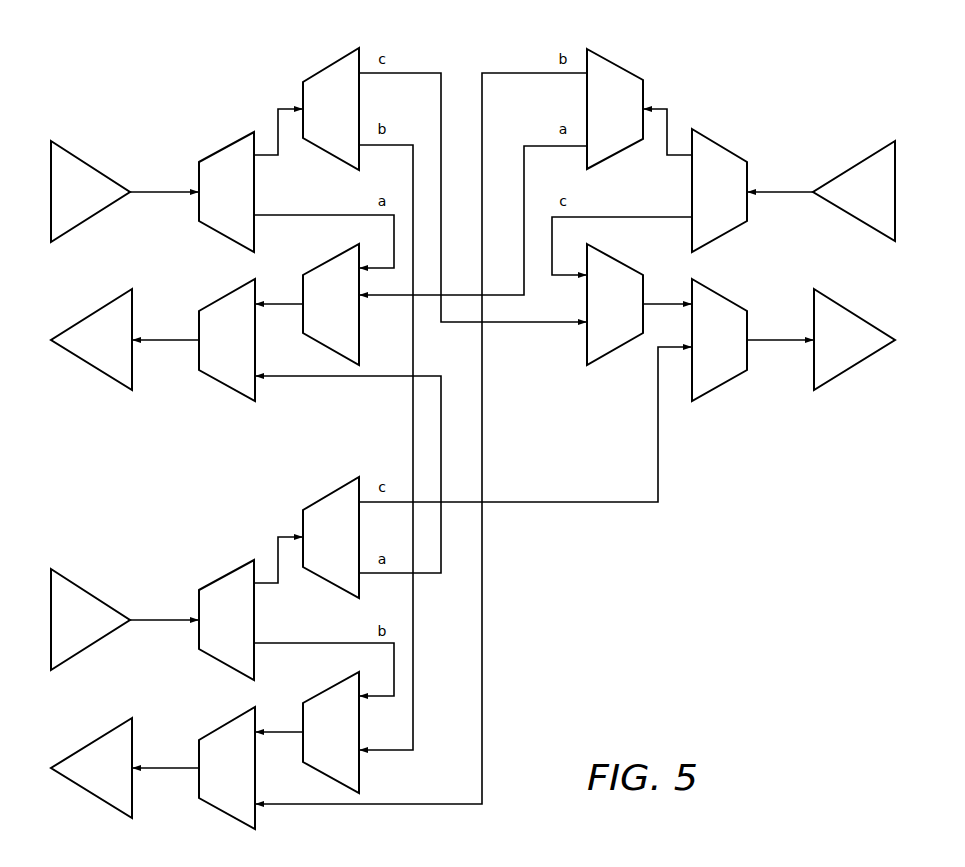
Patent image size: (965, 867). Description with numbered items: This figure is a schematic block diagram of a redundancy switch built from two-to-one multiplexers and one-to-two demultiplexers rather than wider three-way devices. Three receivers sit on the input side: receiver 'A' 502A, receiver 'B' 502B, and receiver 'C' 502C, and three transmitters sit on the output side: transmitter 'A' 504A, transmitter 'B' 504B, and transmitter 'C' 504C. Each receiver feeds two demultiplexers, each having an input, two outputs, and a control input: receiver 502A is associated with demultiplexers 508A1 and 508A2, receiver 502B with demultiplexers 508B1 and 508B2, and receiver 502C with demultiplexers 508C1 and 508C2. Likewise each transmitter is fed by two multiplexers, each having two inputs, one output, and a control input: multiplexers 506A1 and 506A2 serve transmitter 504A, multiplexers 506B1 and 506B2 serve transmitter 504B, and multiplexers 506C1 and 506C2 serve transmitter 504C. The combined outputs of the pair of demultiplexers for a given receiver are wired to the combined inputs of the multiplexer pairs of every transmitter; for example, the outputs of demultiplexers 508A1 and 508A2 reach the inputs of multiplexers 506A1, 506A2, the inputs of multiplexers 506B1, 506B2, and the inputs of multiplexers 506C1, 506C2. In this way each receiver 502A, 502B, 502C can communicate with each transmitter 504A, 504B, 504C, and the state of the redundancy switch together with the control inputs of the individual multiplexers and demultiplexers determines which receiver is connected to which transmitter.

The receiver 'A' 502A is at (51, 193).
The receiver 'B' 502B is at (51, 621).
The receiver 'C' 502C is at (895, 192).
The transmitter 'A' 504A is at (51, 340).
The transmitter 'B' 504B is at (51, 768).
The transmitter 'C' 504C is at (895, 340).
The 2:1 multiplexer 506A1 is at (228, 295).
The 2:1 multiplexer 506A2 is at (331, 260).
The 2:1 multiplexer 506B1 is at (228, 723).
The 2:1 multiplexer 506B2 is at (331, 688).
The 2:1 multiplexer 506C1 is at (612, 258).
The 2:1 multiplexer 506C2 is at (720, 295).
The 1:2 demultiplexer 508A1 is at (228, 147).
The 1:2 demultiplexer 508A2 is at (331, 65).
The 1:2 demultiplexer 508B1 is at (228, 575).
The 1:2 demultiplexer 508B2 is at (331, 493).
The 1:2 demultiplexer 508C1 is at (612, 63).
The 1:2 demultiplexer 508C2 is at (720, 146).